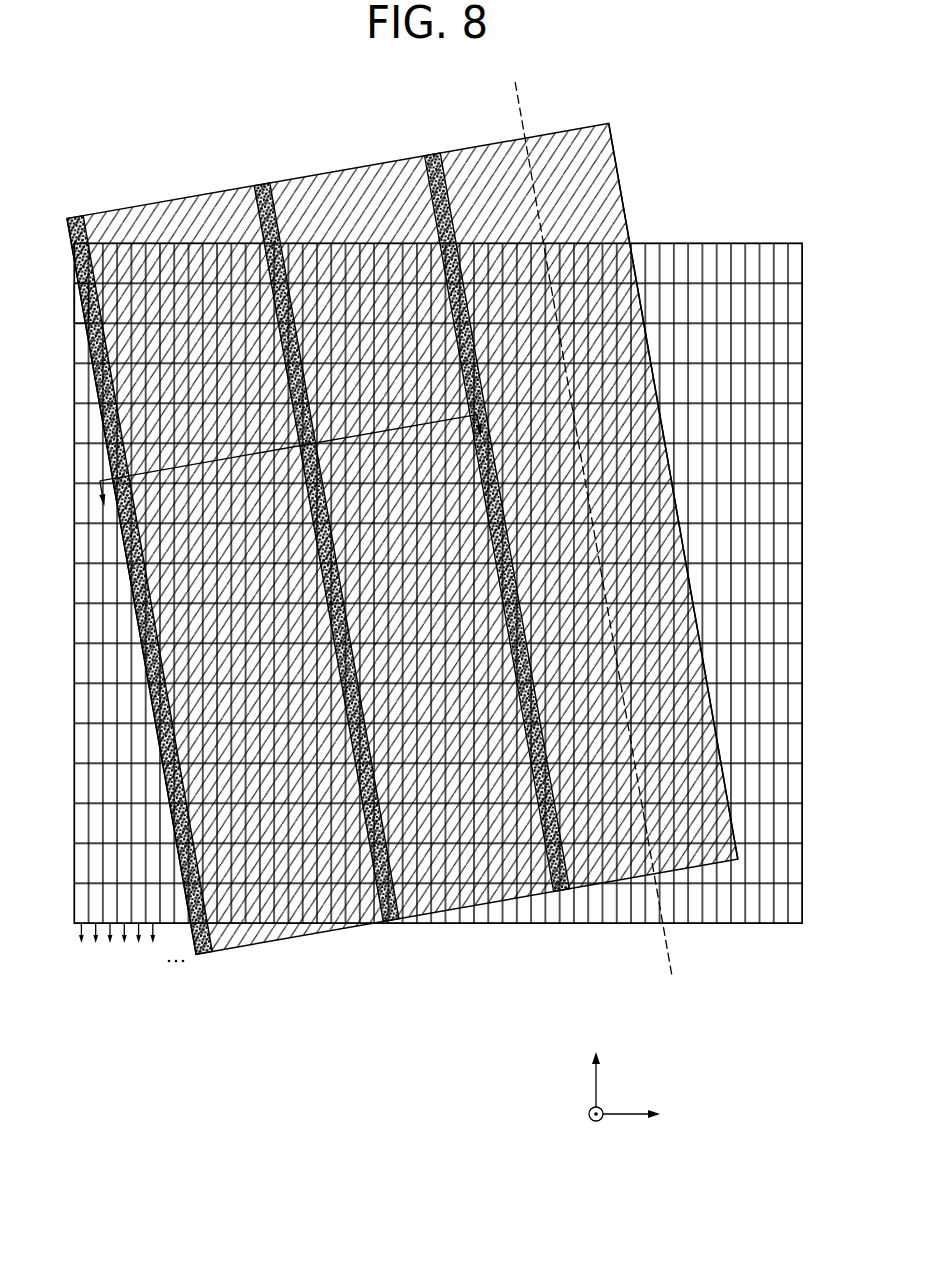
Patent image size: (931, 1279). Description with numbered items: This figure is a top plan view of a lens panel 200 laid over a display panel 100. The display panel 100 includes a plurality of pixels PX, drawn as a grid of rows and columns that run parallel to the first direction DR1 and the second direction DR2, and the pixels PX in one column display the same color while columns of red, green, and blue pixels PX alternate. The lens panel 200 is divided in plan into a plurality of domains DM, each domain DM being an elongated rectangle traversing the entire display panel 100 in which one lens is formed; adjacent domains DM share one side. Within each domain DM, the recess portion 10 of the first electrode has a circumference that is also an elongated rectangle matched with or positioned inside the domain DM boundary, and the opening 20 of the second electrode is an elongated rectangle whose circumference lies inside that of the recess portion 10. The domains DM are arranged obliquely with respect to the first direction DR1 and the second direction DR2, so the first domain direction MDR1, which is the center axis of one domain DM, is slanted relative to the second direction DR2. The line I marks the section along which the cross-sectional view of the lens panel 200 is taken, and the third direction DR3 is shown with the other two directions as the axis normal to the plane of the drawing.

The display panel 100 is at (739, 241).
The lens panel 200 is at (624, 153).
The recess portion 10 is at (405, 560).
The opening 20 is at (399, 518).
The pixel PX is at (78, 308).
The domain DM is at (624, 212).
The first domain direction MDR1 is at (609, 545).
The line I-I' I is at (291, 475).
The first direction DR1 is at (652, 1115).
The second direction DR2 is at (595, 1065).
The third direction DR3 is at (584, 1130).